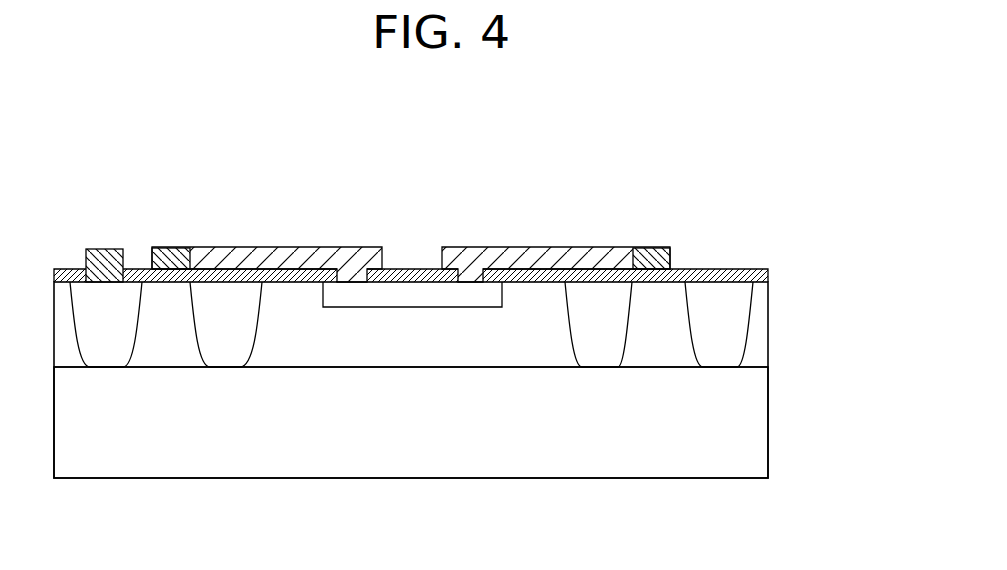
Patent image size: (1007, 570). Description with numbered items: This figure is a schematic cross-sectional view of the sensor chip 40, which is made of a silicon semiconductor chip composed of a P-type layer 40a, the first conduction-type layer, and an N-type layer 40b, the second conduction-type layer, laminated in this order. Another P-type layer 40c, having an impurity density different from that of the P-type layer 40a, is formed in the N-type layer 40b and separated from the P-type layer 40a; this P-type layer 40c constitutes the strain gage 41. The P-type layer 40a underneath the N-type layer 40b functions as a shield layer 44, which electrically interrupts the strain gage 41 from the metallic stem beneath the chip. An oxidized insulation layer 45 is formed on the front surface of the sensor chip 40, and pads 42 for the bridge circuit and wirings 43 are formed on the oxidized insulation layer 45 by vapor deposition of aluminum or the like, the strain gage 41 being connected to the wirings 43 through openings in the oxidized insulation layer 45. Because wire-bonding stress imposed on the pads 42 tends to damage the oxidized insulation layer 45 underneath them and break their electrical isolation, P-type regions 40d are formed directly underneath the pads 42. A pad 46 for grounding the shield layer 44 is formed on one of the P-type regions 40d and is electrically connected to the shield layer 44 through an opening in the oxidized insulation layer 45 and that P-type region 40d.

The sensor chip 40 is at (477, 327).
The P-type layer 40a is at (780, 368).
The N-type layer 40b is at (541, 295).
The P-type layer 40c is at (432, 298).
The P-type regions 40d is at (602, 293).
The strain gage 41 is at (412, 241).
The pads 42 is at (152, 257).
The wirings 43 is at (277, 257).
The shield layer 44 is at (479, 422).
The oxidized insulation layer 45 is at (768, 276).
The pad 46 is at (108, 255).